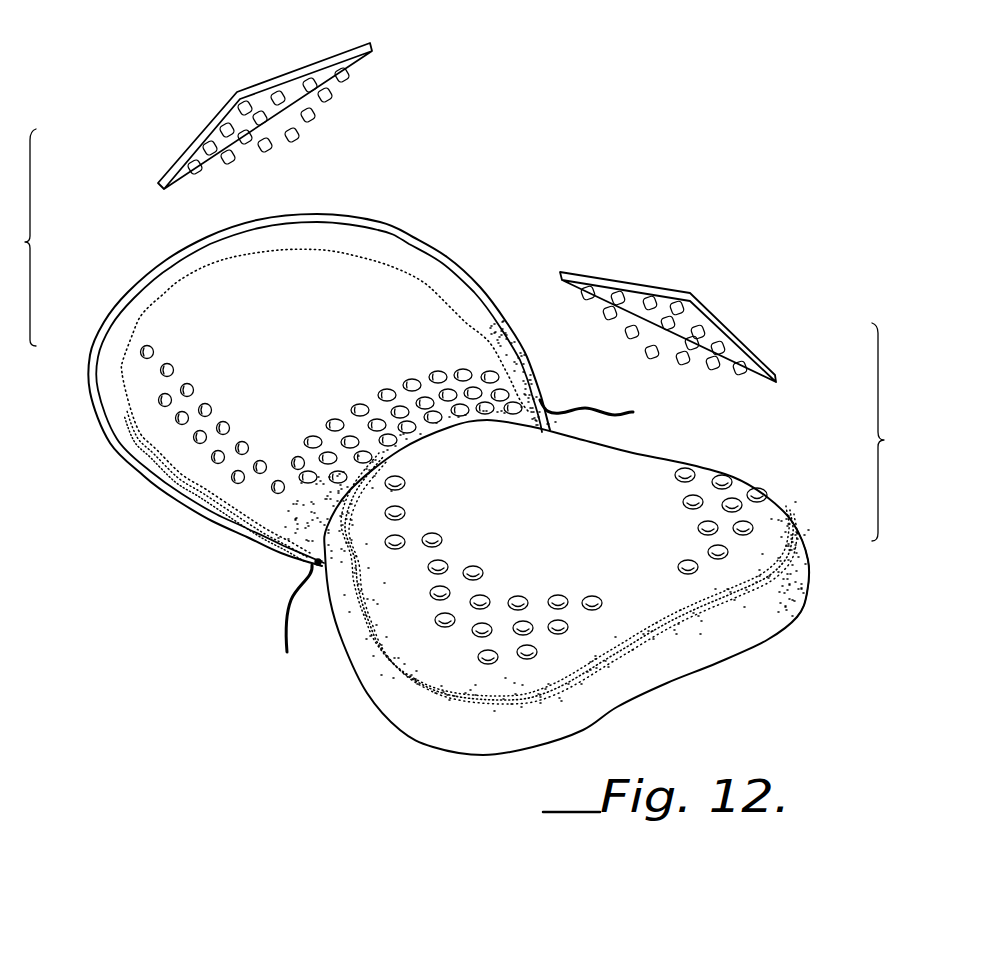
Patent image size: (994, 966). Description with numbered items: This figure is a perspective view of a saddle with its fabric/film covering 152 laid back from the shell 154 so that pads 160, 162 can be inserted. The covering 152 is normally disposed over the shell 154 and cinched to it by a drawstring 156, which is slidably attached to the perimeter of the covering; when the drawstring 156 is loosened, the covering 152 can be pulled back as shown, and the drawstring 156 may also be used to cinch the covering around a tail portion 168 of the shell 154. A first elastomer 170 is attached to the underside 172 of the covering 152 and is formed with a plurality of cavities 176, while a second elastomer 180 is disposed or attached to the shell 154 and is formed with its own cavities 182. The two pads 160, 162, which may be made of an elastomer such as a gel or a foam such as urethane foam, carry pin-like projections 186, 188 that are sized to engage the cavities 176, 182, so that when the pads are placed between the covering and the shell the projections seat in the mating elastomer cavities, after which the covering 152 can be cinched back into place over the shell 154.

The fabric/film covering 152 is at (118, 302).
The shell 154 is at (457, 730).
The drawstring 156 is at (585, 378).
The pad 160 is at (272, 79).
The pad 162 is at (723, 320).
The tail portion 168 is at (808, 578).
The first elastomer 170 is at (324, 344).
The underside 172 is at (418, 268).
The cavities 176 is at (172, 368).
The second elastomer 180 is at (569, 532).
The cavities 182 is at (433, 538).
The pin-like projections 186 is at (350, 72).
The pin-like projections 188 is at (618, 296).